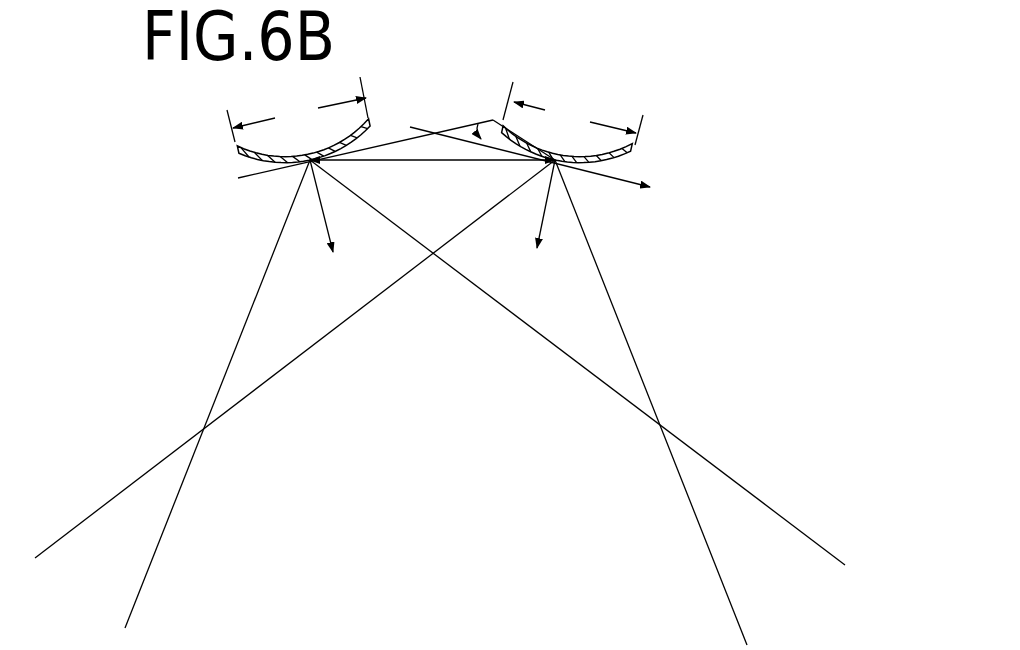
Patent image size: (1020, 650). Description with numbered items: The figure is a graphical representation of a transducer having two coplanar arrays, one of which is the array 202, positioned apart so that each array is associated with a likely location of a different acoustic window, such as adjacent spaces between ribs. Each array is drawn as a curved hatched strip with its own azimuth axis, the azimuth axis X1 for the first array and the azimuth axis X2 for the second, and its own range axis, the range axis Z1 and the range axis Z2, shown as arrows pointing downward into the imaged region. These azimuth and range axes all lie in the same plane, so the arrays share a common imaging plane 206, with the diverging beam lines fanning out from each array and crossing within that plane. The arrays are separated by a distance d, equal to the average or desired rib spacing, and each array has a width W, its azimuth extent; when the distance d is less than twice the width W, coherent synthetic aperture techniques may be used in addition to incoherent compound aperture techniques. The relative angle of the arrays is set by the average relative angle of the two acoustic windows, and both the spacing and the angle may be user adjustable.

The coplanar array 202 is at (238, 153).
The common imaging plane 206 is at (632, 150).
The azimuth axis of first array X1 is at (365, 144).
The azimuth axis of second array X2 is at (545, 168).
The range axis of first array Z1 is at (331, 226).
The range axis of second array Z2 is at (541, 224).
The distance d is at (432, 149).
The width W is at (435, 111).